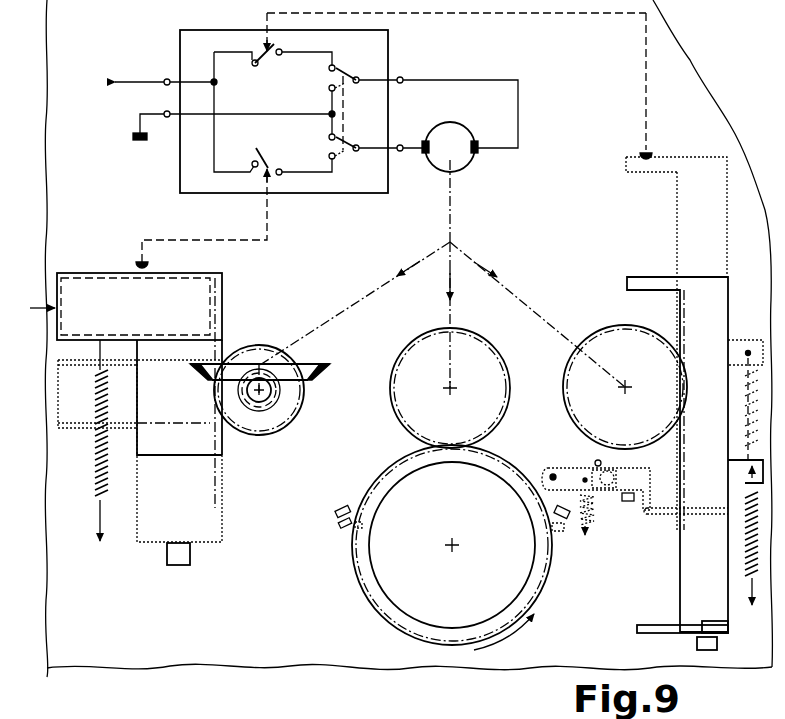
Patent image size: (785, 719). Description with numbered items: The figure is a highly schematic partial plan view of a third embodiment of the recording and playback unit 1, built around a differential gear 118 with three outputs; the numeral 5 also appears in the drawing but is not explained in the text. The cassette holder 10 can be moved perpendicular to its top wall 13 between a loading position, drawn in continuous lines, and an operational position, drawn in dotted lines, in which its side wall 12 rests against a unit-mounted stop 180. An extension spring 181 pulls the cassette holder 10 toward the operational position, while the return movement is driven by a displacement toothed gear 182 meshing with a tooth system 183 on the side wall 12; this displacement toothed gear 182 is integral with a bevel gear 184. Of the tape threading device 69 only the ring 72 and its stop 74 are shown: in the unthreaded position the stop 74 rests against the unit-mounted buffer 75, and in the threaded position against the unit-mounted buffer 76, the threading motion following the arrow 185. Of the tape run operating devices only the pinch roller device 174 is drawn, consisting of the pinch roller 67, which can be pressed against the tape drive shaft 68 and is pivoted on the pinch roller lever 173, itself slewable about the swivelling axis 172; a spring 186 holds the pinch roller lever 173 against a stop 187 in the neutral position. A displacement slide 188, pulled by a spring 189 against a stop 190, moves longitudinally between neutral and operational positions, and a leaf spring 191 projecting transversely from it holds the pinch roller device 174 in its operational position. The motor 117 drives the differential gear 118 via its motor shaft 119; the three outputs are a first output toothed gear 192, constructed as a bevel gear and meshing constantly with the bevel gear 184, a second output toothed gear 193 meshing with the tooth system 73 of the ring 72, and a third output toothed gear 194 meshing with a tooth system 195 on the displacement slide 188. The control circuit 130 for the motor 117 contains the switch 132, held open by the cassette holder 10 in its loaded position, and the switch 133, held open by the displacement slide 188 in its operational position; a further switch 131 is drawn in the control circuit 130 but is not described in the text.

The recording and playback unit 1 is at (136, 673).
The input signal 5 is at (42, 288).
The cassette holder 10 is at (79, 268).
The side wall 12 is at (208, 453).
The top wall 13 is at (122, 277).
The pinch roller 67 is at (600, 490).
The tape drive shaft 68 is at (601, 462).
The tape threading device 69 is at (350, 587).
The ring 72 is at (364, 560).
The tooth system 73 is at (390, 626).
The stop 74 is at (340, 522).
The unit-mounted buffer 75 is at (345, 507).
The unit-mounted buffer 76 is at (562, 520).
The motor 117 is at (460, 132).
The differential gear 118 is at (489, 256).
The motor shaft 119 is at (450, 206).
The control circuit 130 is at (392, 58).
The reversing switch 131 is at (344, 143).
The switch 132 is at (266, 151).
The switch 133 is at (262, 66).
The swivelling axis 172 is at (551, 475).
The pinch roller lever 173 is at (570, 478).
The pinch roller device 174 is at (598, 528).
The unit-mounted stop 180 is at (174, 555).
The extension spring 181 is at (95, 460).
The displacement toothed gear 182 is at (265, 428).
The tooth system 183 is at (224, 316).
The bevel gear 184 is at (283, 397).
The arrow 185 is at (536, 630).
The spring 186 is at (590, 516).
The stop 187 is at (628, 503).
The displacement slide 188 is at (726, 335).
The spring 189 is at (748, 580).
The stop 190 is at (697, 645).
The leaf spring 191 is at (650, 625).
The first output toothed gear 192 is at (305, 372).
The second output toothed gear 193 is at (467, 346).
The third output toothed gear 194 is at (597, 343).
The tooth system 195 is at (680, 343).